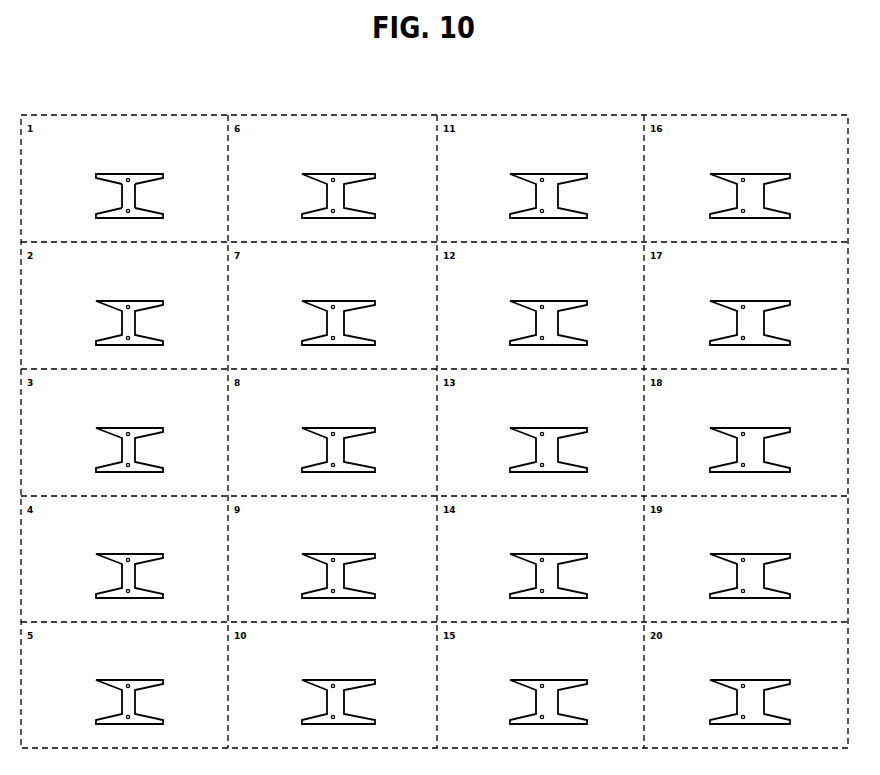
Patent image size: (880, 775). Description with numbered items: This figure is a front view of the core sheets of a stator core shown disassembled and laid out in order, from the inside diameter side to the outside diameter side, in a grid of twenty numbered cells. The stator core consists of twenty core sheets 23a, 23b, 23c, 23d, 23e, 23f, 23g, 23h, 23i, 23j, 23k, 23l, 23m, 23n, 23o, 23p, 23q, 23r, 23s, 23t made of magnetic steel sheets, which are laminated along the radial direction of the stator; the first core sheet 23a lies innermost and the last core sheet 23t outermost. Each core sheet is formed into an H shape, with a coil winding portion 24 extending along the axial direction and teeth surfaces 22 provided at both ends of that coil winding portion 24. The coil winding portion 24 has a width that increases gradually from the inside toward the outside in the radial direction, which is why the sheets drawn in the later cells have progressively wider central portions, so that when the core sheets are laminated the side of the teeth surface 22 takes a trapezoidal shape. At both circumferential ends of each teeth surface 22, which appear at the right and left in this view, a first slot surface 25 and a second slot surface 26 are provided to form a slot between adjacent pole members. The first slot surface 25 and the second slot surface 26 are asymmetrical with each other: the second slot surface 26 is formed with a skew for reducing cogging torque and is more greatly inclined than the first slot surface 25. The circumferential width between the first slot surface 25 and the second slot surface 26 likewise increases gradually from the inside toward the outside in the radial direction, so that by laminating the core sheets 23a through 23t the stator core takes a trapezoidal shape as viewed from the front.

The teeth surface 22 is at (130, 174).
The coil winding portion 24 is at (122, 196).
The first slot surface 25 is at (97, 176).
The second slot surface 26 is at (164, 216).
The core sheet 23a is at (138, 181).
The core sheet 23b is at (177, 299).
The core sheet 23c is at (177, 426).
The core sheet 23d is at (177, 553).
The core sheet 23e is at (177, 679).
The core sheet 23f is at (386, 172).
The core sheet 23g is at (386, 299).
The core sheet 23h is at (386, 426).
The core sheet 23i is at (386, 553).
The core sheet 23j is at (386, 679).
The core sheet 23k is at (593, 172).
The core sheet 23l is at (593, 299).
The core sheet 23m is at (593, 426).
The core sheet 23n is at (593, 553).
The core sheet 23o is at (593, 679).
The core sheet 23p is at (797, 172).
The core sheet 23q is at (797, 299).
The core sheet 23r is at (797, 426).
The core sheet 23s is at (797, 553).
The core sheet 23t is at (797, 679).